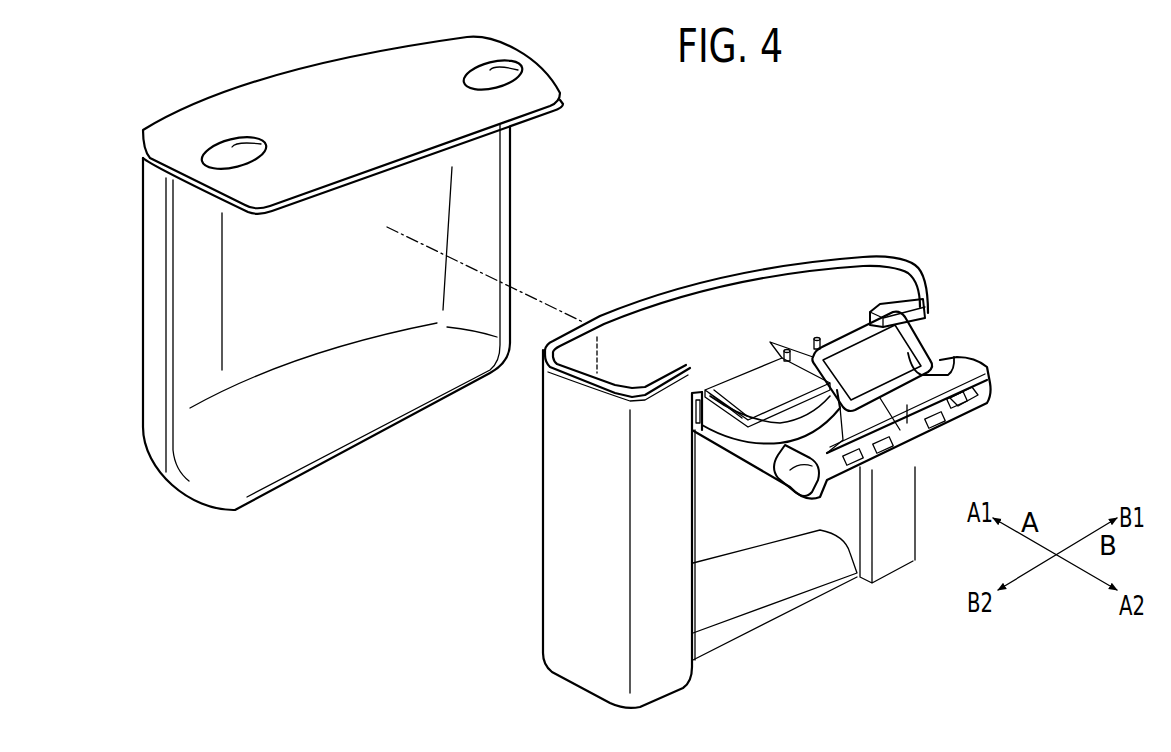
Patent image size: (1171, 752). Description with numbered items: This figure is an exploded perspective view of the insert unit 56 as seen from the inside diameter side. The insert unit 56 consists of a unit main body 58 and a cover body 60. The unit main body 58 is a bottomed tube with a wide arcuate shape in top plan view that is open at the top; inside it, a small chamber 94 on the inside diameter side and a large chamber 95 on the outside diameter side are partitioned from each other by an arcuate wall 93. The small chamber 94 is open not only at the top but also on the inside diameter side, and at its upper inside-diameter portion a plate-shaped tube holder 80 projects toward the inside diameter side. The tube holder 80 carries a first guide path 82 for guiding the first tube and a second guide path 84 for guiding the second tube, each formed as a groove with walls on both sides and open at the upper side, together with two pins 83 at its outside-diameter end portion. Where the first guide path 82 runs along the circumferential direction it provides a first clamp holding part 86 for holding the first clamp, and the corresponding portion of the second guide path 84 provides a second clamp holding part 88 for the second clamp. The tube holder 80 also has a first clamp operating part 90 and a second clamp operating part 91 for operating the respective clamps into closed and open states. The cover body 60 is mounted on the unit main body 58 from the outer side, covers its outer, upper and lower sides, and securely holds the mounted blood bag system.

The insert unit 56 is at (899, 138).
The unit main body 58 is at (709, 468).
The cover body 60 is at (277, 98).
The tube holder 80 is at (852, 415).
The first guide path 82 is at (940, 360).
The pins 83 is at (785, 351).
The second guide path 84 is at (797, 407).
The first clamp holding part 86 is at (918, 370).
The second clamp holding part 88 is at (782, 460).
The first clamp operating part 90 is at (966, 406).
The second clamp operating part 91 is at (832, 468).
The arcuate wall 93 is at (830, 340).
The small chamber 94 is at (722, 370).
The large chamber 95 is at (748, 288).